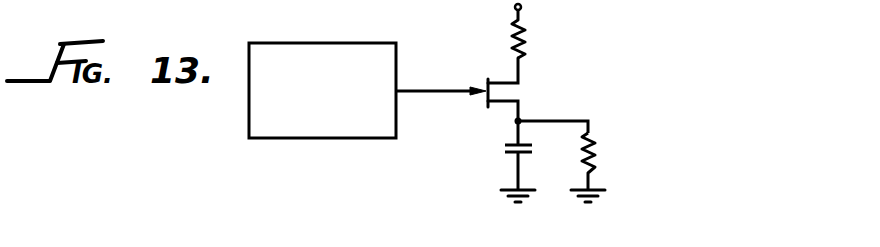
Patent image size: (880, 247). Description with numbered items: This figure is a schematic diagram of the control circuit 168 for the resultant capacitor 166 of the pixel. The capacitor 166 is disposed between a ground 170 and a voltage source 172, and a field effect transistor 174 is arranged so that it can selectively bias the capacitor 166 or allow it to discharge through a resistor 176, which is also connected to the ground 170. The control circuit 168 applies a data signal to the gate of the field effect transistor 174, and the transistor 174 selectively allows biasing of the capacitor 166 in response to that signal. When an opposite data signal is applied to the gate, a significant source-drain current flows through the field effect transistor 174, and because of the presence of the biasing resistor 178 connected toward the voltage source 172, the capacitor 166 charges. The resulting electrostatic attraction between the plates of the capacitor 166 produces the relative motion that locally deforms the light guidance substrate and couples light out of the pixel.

The capacitor 166 is at (505, 149).
The control circuit 168 is at (337, 42).
The ground 170 is at (505, 189).
The voltage source 172 is at (522, 7).
The field effect transistor 174 is at (503, 107).
The resistor 176 is at (598, 150).
The biasing resistor 178 is at (526, 46).